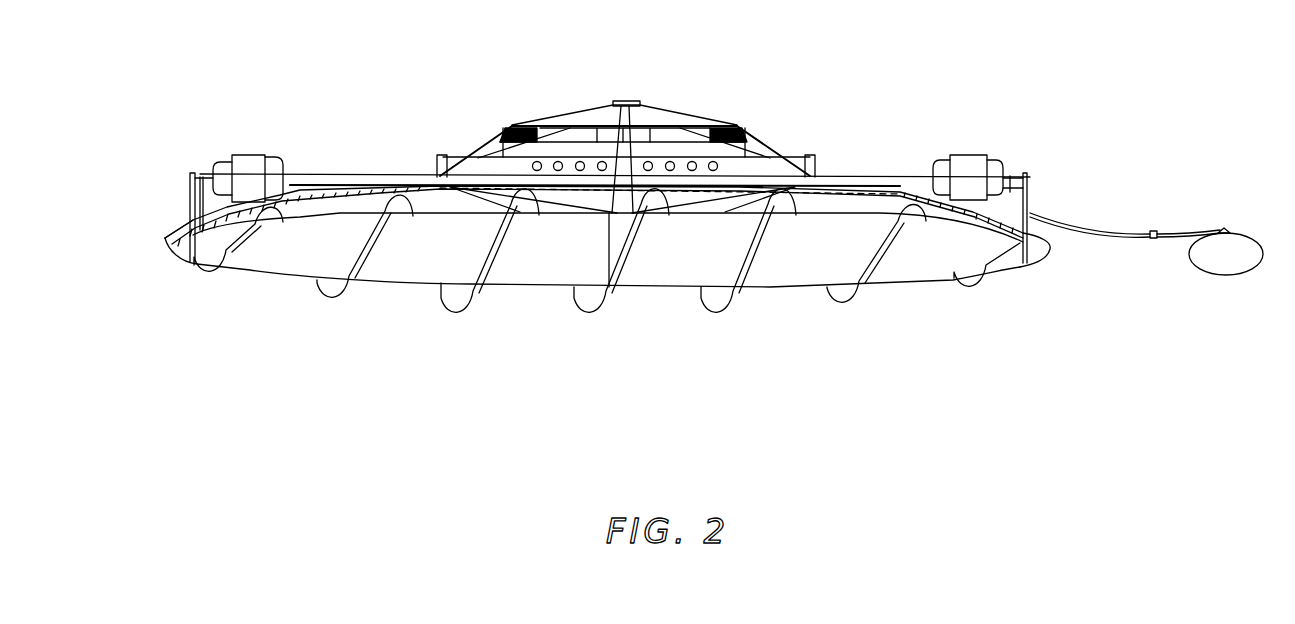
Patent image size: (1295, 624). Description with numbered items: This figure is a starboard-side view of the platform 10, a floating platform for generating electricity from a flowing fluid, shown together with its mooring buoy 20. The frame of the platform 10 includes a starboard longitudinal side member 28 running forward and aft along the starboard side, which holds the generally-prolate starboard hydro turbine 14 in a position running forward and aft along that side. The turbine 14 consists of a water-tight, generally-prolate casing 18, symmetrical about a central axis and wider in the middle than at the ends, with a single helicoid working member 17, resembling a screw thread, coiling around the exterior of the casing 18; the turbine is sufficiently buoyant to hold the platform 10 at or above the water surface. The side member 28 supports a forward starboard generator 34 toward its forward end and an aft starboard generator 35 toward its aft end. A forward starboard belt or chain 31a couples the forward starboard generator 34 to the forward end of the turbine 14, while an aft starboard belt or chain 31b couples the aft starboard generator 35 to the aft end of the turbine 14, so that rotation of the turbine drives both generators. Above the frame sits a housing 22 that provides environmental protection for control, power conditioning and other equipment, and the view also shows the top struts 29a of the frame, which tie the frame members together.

The platform 10 is at (688, 209).
The starboard hydro turbine 14 is at (560, 262).
The helicoid working member 17 is at (333, 305).
The casing 18 is at (402, 260).
The mooring buoy 20 is at (1225, 267).
The housing 22 is at (587, 110).
The starboard longitudinal side member 28 is at (875, 176).
The top struts 29a is at (480, 157).
The forward starboard belt or chain 31a is at (1030, 193).
The aft starboard belt or chain 31b is at (190, 192).
The forward starboard generator 34 is at (965, 170).
The aft starboard generator 35 is at (250, 162).